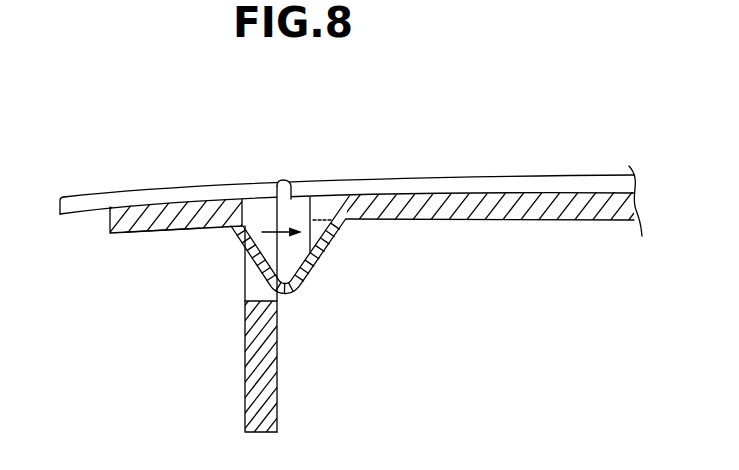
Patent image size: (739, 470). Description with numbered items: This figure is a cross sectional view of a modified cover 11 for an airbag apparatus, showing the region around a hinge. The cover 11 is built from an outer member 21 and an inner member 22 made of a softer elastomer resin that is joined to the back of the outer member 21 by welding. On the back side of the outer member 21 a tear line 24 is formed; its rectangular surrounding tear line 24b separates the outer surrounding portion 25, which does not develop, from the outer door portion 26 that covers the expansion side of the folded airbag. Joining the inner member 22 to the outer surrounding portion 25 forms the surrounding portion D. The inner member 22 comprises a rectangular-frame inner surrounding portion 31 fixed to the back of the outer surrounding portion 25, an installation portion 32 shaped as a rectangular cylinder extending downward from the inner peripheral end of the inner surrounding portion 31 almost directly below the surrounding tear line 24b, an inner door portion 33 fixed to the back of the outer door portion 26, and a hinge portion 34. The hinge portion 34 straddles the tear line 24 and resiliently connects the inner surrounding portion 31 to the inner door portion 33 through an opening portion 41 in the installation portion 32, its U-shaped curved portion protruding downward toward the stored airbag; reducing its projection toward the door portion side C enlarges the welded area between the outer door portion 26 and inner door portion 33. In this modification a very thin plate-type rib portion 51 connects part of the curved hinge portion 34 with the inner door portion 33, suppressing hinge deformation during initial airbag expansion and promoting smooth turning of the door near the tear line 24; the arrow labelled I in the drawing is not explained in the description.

The cover 11 is at (130, 105).
The outer member 21 is at (72, 208).
The inner member 22 is at (110, 218).
The tear line 24 is at (282, 176).
The surrounding tear line 24b is at (288, 178).
The outer surrounding portion 25 is at (181, 187).
The outer door portion 26 is at (525, 176).
The inner surrounding portion 31 is at (158, 237).
The installation portion 32 is at (262, 385).
The inner door portion 33 is at (523, 220).
The hinge portion 34 is at (313, 265).
The opening portion 41 is at (257, 293).
The rib portion 51 is at (321, 236).
The surrounding portion D is at (133, 190).
The door portion side C is at (461, 177).
The direction of insertion I is at (281, 220).